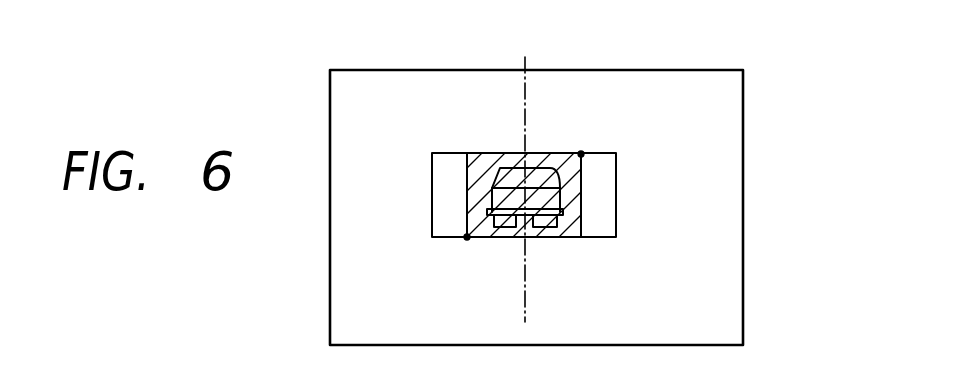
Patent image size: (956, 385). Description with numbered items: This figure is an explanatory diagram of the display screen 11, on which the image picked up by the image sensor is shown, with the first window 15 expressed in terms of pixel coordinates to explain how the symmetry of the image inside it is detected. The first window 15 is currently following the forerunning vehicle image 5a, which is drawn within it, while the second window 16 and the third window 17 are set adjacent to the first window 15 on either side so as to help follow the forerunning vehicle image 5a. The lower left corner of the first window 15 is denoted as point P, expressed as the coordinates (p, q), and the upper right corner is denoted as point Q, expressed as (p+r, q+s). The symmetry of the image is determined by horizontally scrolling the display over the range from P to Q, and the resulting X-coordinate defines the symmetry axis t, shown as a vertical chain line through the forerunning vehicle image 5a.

The display screen 11 is at (743, 135).
The first window 15 is at (481, 161).
The second window 16 is at (602, 183).
The third window 17 is at (443, 153).
The forerunning vehicle image 5a is at (530, 153).
The symmetry axis t is at (526, 57).
The lower left corner of the first window P is at (467, 237).
The upper right corner of the first window Q is at (581, 154).